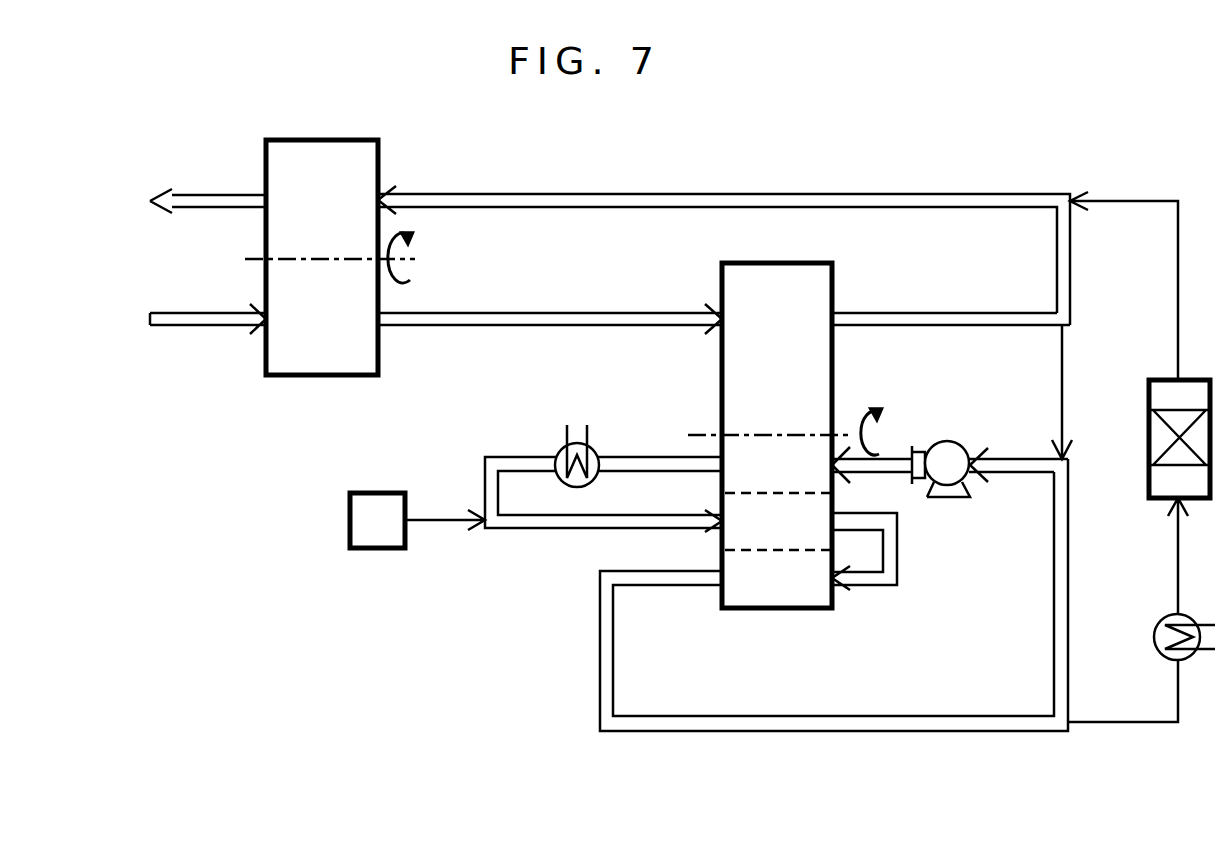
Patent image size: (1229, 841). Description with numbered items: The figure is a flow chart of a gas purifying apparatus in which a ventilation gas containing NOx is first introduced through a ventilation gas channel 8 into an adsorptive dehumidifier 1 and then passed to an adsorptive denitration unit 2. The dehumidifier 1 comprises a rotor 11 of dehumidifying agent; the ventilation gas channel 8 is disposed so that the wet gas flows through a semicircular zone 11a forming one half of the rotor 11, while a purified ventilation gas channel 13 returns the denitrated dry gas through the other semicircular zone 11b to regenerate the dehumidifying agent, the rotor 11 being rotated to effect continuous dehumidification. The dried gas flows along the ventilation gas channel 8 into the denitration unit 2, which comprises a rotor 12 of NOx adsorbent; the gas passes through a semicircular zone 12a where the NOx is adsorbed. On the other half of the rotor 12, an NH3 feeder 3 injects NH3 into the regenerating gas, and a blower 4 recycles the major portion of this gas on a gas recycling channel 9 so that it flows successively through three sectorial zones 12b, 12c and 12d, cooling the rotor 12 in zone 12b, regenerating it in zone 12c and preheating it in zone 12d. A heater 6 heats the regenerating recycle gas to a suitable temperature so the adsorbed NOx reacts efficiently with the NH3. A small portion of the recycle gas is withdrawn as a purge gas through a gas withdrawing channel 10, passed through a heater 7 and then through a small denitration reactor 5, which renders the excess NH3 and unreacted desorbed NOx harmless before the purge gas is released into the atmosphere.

The adsorptive dehumidifier 1 is at (328, 124).
The rotor 11 is at (380, 150).
The zone 11a is at (283, 353).
The zone 11b is at (288, 167).
The purified ventilation gas channel 13 is at (607, 192).
The ventilation gas channel 8 is at (601, 311).
The adsorptive denitration unit 2 is at (852, 280).
The rotor 12 is at (836, 372).
The zone 12a is at (737, 378).
The zone 12b is at (738, 479).
The zone 12c is at (740, 540).
The zone 12d is at (740, 597).
The heater 6 is at (560, 448).
The NH3 feeder 3 is at (373, 492).
The blower 4 is at (955, 442).
The gas recycling channel 9 is at (1030, 473).
The denitration reactor 5 is at (1165, 377).
The heater 7 is at (1163, 615).
The gas withdrawing channel 10 is at (1130, 720).